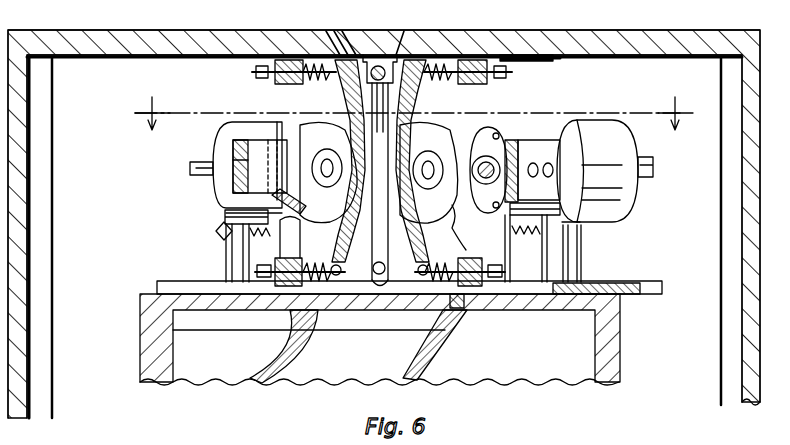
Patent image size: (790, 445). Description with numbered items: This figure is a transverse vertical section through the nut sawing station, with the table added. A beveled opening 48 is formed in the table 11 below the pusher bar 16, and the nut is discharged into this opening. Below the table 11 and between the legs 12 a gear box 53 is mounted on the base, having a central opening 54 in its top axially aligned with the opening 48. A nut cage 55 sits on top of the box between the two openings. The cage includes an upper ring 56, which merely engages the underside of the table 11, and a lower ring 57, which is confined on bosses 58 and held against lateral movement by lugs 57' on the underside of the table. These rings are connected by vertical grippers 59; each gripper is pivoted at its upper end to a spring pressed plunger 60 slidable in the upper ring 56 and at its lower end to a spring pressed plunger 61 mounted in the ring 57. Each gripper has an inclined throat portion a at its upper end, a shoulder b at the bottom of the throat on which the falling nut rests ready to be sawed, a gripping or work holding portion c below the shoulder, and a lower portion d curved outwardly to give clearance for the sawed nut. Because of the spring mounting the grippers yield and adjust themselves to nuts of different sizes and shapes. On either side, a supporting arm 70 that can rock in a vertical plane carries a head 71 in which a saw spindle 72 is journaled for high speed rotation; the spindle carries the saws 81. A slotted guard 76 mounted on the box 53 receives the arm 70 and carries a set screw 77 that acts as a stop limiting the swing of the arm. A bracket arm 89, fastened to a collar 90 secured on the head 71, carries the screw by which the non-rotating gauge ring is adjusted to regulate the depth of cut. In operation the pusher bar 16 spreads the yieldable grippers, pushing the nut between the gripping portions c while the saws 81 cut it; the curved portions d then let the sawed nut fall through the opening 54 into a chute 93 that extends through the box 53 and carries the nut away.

The table 11 is at (713, 42).
The legs 12 is at (38, 172).
The beveled opening 48 is at (401, 44).
The pusher bar 16 is at (414, 128).
The gear box 53 is at (152, 320).
The central opening 54 is at (356, 316).
The nut cage 55 is at (412, 108).
The upper ring 56 is at (280, 88).
The lower ring 57 is at (467, 226).
The lugs 57' is at (552, 76).
The bosses 58 is at (288, 318).
The vertical grippers 59 is at (426, 246).
The spring pressed plunger 60 is at (483, 84).
The spring pressed plunger 61 is at (468, 306).
The supporting arm 70 is at (292, 242).
The head 71 is at (226, 140).
The saw spindle 72 is at (192, 168).
The slotted guard 76 is at (180, 292).
The set screw 77 is at (216, 232).
The saws 81 is at (325, 138).
The bracket arm 89 is at (247, 175).
The collar 90 is at (523, 146).
The chute 93 is at (432, 360).
The inclined throat portion a is at (336, 98).
The shoulder b is at (444, 138).
The gripping portion c is at (391, 172).
The curved lower portion d is at (342, 246).